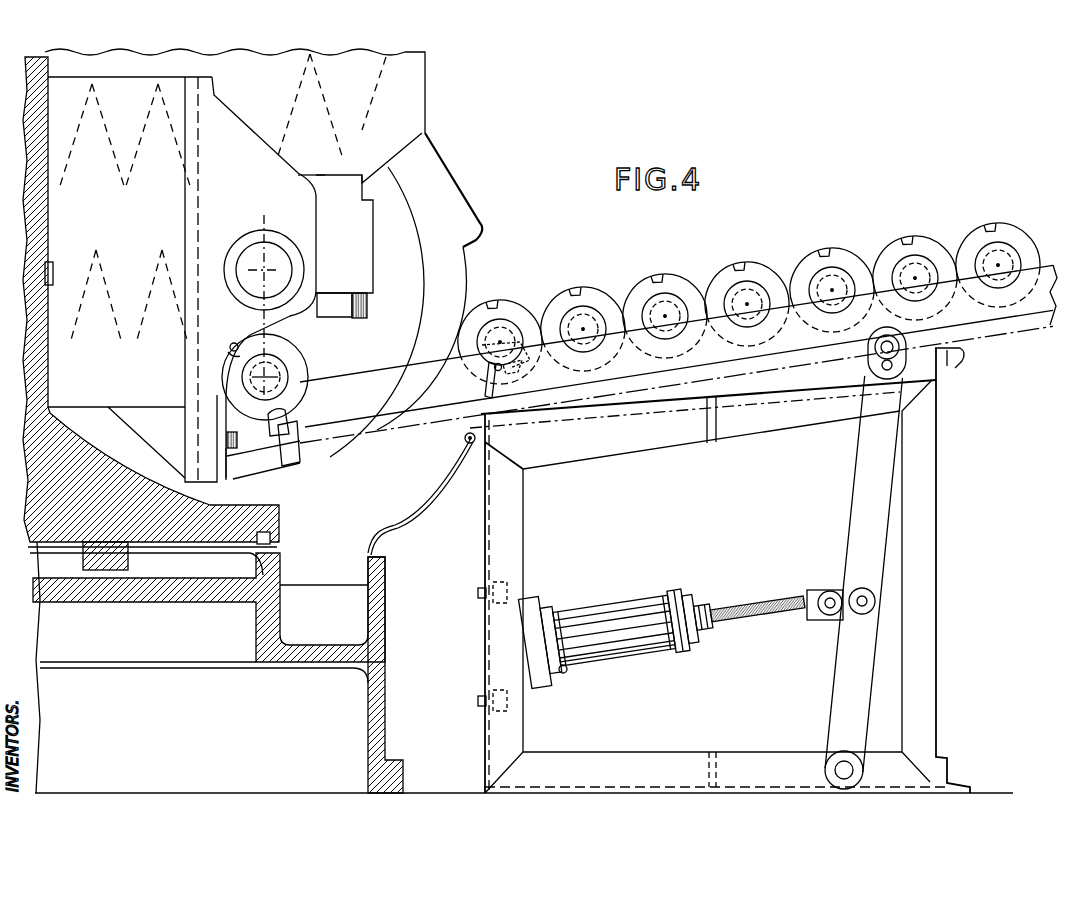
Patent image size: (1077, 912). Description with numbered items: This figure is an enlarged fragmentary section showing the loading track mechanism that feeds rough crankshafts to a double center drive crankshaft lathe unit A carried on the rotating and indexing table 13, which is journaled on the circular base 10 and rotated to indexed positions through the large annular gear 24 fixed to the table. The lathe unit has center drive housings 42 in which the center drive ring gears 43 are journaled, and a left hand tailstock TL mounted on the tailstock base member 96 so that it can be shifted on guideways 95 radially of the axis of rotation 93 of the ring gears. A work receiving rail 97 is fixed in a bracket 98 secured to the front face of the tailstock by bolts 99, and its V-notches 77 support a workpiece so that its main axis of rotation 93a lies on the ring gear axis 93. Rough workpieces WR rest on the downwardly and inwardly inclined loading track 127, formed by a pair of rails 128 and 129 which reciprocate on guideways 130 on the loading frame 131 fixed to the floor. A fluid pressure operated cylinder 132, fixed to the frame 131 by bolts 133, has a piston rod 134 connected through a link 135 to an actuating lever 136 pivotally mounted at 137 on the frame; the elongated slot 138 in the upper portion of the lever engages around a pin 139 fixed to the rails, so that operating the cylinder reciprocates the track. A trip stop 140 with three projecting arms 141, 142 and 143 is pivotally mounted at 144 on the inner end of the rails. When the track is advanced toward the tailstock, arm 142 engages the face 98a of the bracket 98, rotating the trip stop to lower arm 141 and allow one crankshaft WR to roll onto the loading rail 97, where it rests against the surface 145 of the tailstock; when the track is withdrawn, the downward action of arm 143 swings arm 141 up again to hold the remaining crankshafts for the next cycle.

The double center drive crankshaft lathe unit A is at (418, 72).
The left hand tailstock TL is at (268, 278).
The tailstock base member 96 is at (128, 208).
The axis of rotation of the center drive ring gears 93 is at (263, 270).
The surface of the tailstock 145 is at (236, 343).
The main axis of rotation of the workpiece 93a is at (274, 368).
The rough workpieces WR is at (310, 378).
The face of the loading rail bracket 98a is at (291, 420).
The guideways 95 is at (183, 410).
The bolts 99 is at (236, 462).
The bracket 98 is at (272, 460).
The work receiving rail 97 is at (293, 463).
The rotating and indexing table 13 is at (151, 300).
The large annular gear 24 is at (145, 570).
The circular base 10 is at (386, 717).
The center drive ring gears 43 is at (398, 212).
The center drive housings 42 is at (462, 215).
The arm of the trip stop 141 is at (470, 341).
The pivot of the trip stop 144 is at (492, 368).
The arm of the trip stop 142 is at (486, 392).
The trip stop 140 is at (514, 372).
The arm of the trip stop 143 is at (527, 363).
The V-notches 77 is at (742, 270).
The rail of the loading track 129 is at (1040, 265).
The loading track 127 is at (962, 306).
The pin 139 is at (956, 367).
The elongated slot 138 is at (880, 370).
The rail of the loading track 128 is at (805, 372).
The guideways 130 is at (618, 405).
The actuating lever 136 is at (858, 492).
The loading frame 131 is at (497, 544).
The fluid pressure operated cylinder 132 is at (602, 622).
The piston rod 134 is at (752, 614).
The link 135 is at (830, 590).
The bolts 133 is at (566, 675).
The pivot of the actuating lever 137 is at (825, 771).